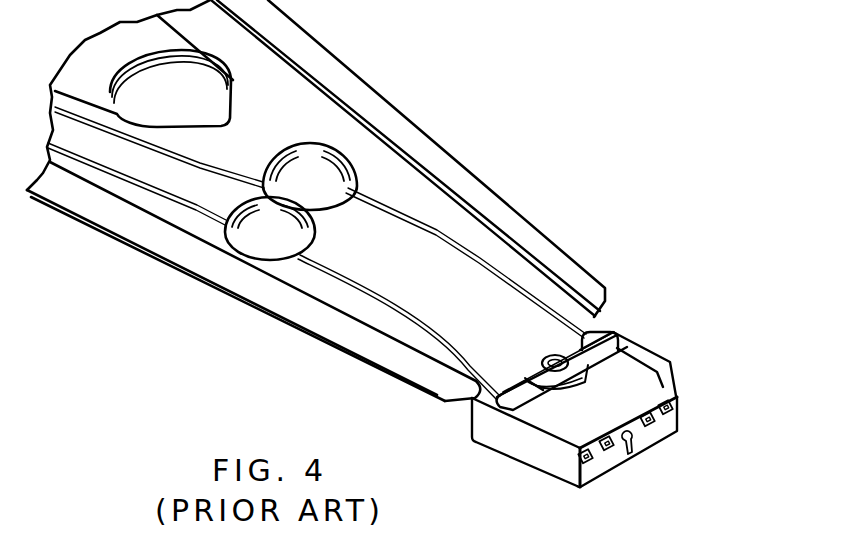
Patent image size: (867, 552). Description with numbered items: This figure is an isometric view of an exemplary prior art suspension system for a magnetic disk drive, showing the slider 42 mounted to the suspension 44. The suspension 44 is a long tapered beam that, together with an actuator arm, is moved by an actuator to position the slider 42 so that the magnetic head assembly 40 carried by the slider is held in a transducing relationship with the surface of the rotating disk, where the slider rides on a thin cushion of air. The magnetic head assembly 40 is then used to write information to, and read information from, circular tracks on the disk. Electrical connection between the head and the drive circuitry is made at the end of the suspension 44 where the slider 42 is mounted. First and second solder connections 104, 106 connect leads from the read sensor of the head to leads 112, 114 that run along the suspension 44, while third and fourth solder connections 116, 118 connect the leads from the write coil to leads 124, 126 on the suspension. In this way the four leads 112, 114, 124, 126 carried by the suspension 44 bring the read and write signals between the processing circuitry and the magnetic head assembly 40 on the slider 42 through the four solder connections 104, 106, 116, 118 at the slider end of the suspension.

The suspension 44 is at (455, 161).
The lead 114 is at (520, 279).
The lead 112 is at (340, 291).
The lead 126 is at (437, 232).
The lead 124 is at (363, 288).
The slider 42 is at (523, 466).
The magnetic head assembly 40 is at (628, 463).
The first solder connection 104 is at (574, 460).
The third solder connection 116 is at (604, 450).
The fourth solder connection 118 is at (652, 423).
The second solder connection 106 is at (670, 404).